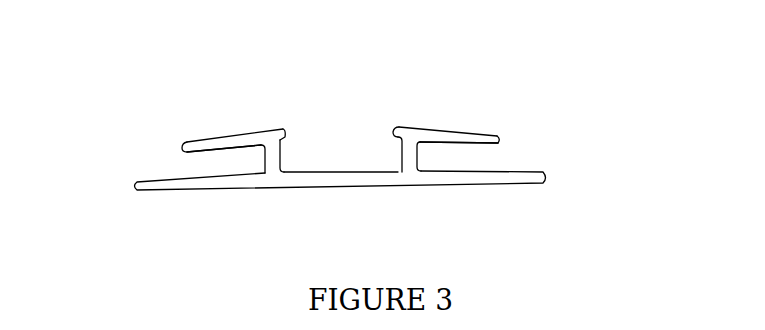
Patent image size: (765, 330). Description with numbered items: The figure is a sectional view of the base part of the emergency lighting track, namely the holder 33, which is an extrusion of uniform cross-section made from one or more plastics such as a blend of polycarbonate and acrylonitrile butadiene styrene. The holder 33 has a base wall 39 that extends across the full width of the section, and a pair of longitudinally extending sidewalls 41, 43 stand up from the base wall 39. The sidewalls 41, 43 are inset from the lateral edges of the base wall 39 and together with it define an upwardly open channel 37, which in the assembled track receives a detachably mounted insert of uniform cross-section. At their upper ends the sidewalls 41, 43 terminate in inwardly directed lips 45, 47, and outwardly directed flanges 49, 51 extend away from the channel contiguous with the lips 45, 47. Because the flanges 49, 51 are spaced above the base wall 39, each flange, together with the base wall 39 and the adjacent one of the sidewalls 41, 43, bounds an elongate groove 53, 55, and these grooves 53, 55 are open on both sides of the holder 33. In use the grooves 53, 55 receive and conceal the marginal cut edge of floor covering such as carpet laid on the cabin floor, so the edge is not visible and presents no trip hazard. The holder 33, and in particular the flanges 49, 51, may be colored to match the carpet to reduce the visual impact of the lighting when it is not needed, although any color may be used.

The holder 33 is at (222, 221).
The channel 37 is at (338, 147).
The base wall 39 is at (385, 183).
The sidewall 41 is at (283, 155).
The sidewall 43 is at (402, 152).
The lip 45 is at (284, 130).
The lip 47 is at (400, 125).
The flange 49 is at (206, 146).
The flange 51 is at (470, 130).
The groove 53 is at (192, 166).
The groove 55 is at (482, 153).